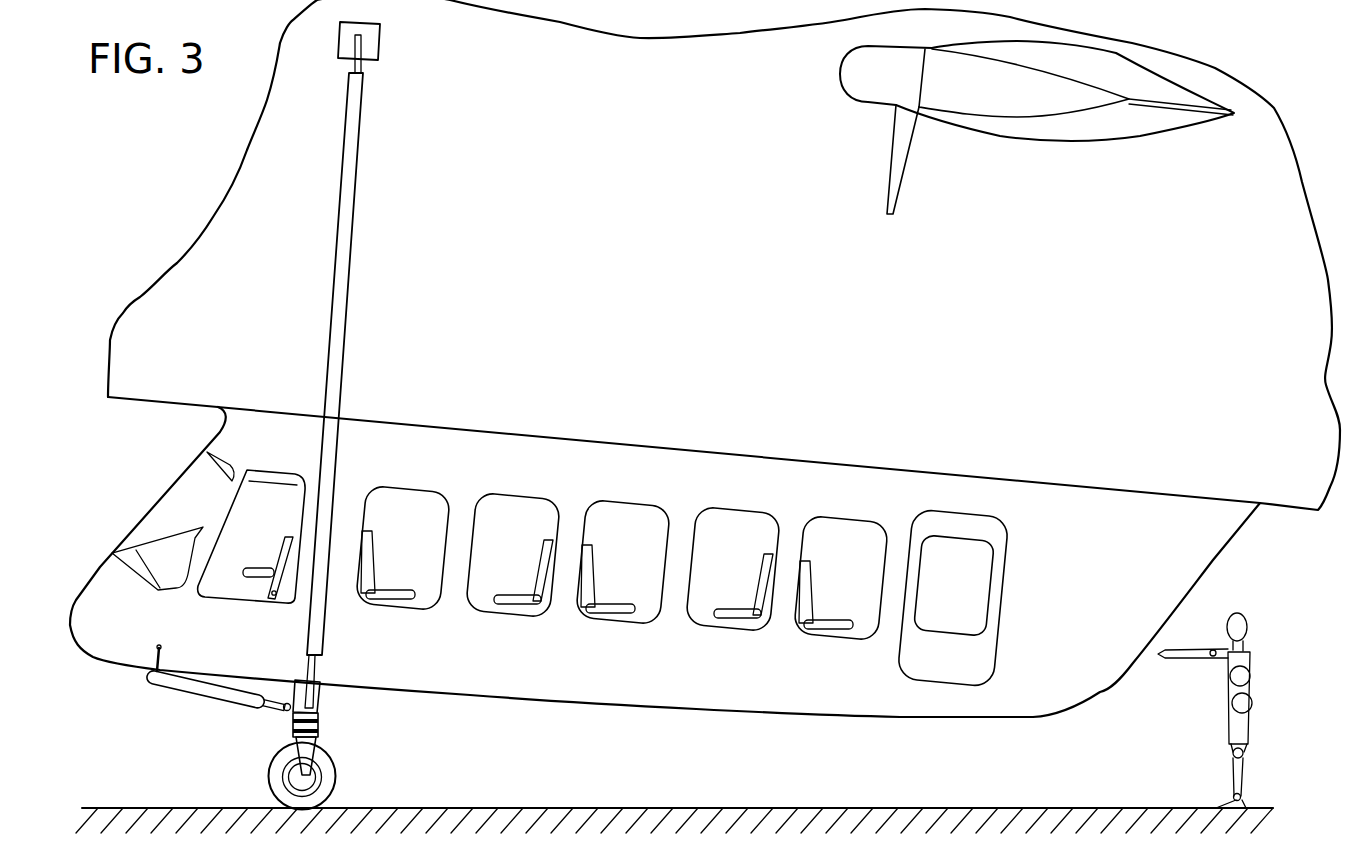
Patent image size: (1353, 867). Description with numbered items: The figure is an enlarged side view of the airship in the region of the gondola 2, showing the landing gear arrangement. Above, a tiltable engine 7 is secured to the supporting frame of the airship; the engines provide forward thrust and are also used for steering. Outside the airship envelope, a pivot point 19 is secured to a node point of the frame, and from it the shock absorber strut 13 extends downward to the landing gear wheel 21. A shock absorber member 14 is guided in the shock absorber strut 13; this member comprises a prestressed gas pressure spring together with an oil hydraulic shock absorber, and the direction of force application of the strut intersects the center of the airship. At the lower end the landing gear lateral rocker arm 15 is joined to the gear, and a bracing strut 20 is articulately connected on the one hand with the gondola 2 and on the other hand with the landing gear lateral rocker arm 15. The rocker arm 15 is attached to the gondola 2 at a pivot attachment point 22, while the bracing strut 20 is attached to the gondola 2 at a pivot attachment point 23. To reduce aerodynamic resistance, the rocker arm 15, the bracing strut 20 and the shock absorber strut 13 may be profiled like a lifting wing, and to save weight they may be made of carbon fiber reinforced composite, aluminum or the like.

The gondola 2 is at (628, 462).
The tiltable engine 7 is at (1004, 102).
The shock absorber strut 13 is at (344, 228).
The shock absorber member 14 is at (317, 663).
The landing gear lateral rocker arm 15 is at (318, 700).
The pivot point 19 is at (372, 48).
The bracing strut 20 is at (223, 693).
The landing gear wheel 21 is at (323, 787).
The pivot attachment point 22 is at (302, 680).
The pivot attachment point 23 is at (160, 652).